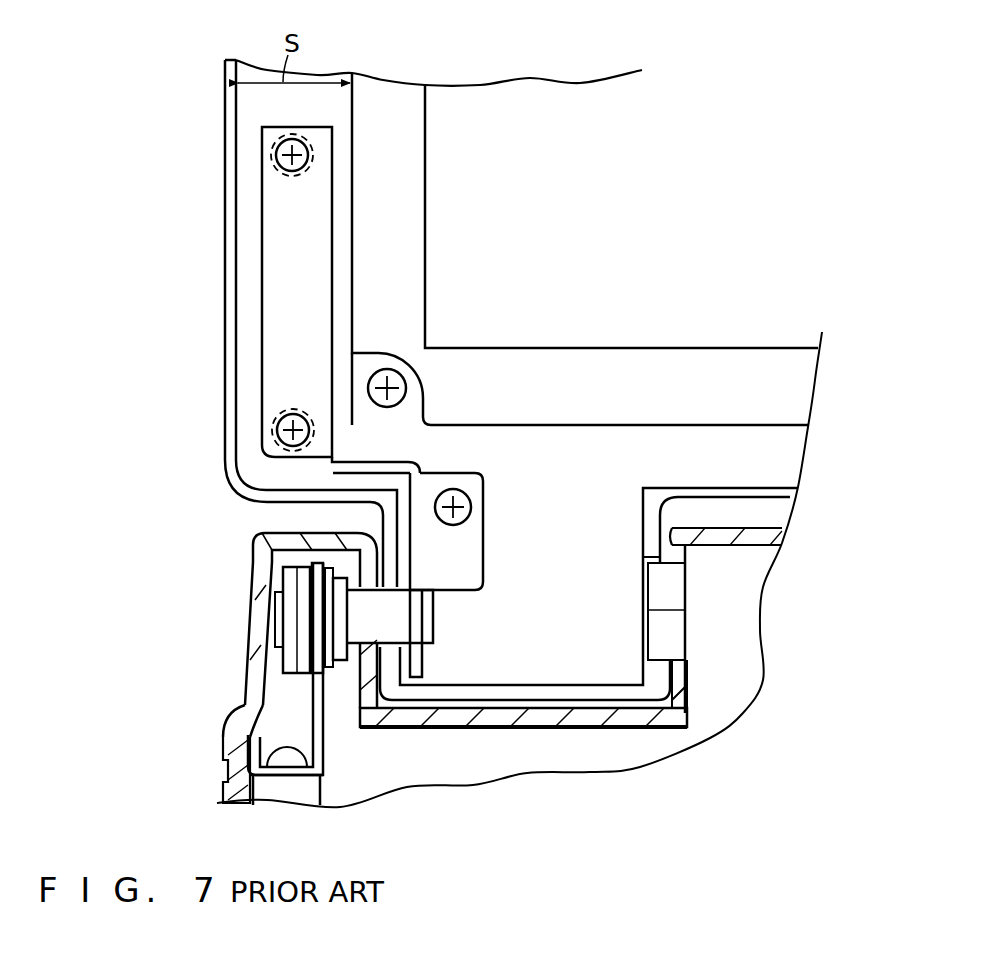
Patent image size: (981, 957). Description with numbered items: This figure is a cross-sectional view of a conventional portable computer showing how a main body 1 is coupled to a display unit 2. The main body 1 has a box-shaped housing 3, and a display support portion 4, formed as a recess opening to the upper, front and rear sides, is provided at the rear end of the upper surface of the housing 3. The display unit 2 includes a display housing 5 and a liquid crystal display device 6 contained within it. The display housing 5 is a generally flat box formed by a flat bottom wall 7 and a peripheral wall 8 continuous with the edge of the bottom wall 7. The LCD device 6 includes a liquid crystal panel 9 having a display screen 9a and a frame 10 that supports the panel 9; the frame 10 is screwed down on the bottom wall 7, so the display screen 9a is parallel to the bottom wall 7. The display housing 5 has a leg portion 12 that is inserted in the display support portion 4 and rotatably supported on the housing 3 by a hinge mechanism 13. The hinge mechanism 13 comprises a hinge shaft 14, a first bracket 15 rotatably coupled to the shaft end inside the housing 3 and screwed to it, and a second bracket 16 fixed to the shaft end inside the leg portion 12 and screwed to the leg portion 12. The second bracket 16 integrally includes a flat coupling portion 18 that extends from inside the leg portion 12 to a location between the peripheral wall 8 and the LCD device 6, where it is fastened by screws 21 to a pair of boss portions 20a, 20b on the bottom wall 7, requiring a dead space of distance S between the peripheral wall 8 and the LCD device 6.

The main body 1 is at (222, 713).
The display unit 2 is at (538, 98).
The housing 3 is at (225, 755).
The display support portion 4 is at (508, 715).
The display housing 5 is at (225, 207).
The liquid crystal display device 6 is at (583, 405).
The bottom wall 7 is at (345, 302).
The peripheral wall 8 is at (290, 108).
The liquid crystal panel 9 is at (758, 335).
The display screen 9a is at (671, 207).
The frame 10 is at (400, 215).
The leg portion 12 is at (612, 690).
The hinge mechanism 13 is at (436, 617).
The hinge shaft 14 is at (392, 623).
The first bracket 15 is at (327, 747).
The second bracket 16 is at (468, 545).
The coupling portion 18 is at (272, 258).
The boss portion 20a is at (266, 150).
The boss portion 20b is at (276, 408).
The screws 21 is at (300, 165).